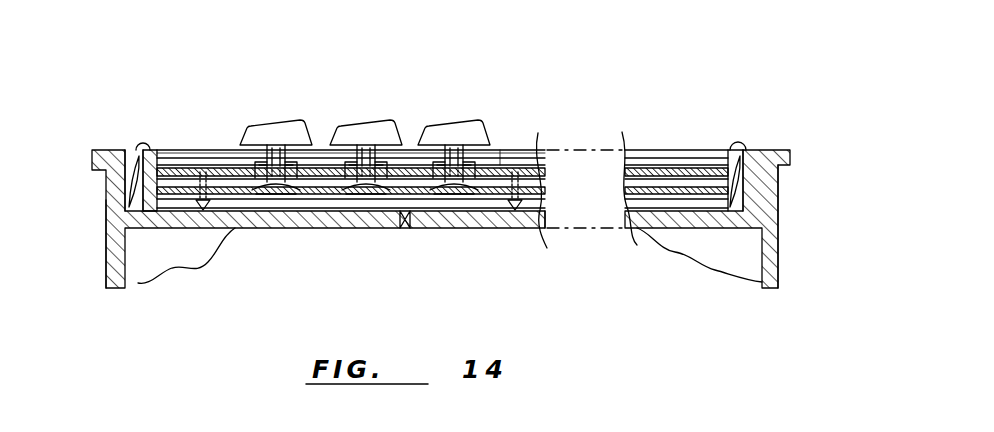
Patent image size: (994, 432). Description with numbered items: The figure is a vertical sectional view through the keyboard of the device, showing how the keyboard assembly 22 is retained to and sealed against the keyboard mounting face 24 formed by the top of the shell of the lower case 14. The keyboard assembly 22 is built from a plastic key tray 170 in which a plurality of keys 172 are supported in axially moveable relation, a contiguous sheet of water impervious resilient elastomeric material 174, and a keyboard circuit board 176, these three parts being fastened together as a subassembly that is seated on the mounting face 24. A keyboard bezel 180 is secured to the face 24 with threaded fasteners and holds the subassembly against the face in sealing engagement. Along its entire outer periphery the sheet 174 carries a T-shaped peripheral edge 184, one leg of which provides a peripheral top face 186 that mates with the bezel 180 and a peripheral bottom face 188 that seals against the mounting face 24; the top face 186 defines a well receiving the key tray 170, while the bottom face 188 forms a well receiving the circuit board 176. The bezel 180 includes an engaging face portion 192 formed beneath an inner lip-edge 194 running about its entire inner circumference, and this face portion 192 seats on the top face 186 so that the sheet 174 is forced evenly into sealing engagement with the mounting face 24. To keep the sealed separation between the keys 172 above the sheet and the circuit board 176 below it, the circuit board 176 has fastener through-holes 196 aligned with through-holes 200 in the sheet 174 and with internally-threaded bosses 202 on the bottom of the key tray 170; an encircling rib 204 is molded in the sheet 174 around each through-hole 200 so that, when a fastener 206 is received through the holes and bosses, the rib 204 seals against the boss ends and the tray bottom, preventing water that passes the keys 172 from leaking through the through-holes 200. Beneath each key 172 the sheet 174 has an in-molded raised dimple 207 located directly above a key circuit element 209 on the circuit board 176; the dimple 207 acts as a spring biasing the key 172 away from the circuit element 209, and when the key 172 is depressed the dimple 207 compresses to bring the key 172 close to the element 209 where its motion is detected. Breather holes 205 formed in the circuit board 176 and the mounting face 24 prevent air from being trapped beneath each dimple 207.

The lower case 14 is at (800, 225).
The keyboard assembly 22 is at (292, 57).
The keyboard mounting face 24 is at (164, 182).
The key tray 170 is at (405, 162).
The keys 172 is at (372, 130).
The sheet of water impervious resilient elastomeric material 174 is at (320, 158).
The keyboard circuit board 176 is at (333, 228).
The keyboard bezel 180 is at (745, 150).
The T-shaped peripheral edge 184 is at (137, 184).
The peripheral top face 186 is at (140, 162).
The peripheral bottom face 188 is at (146, 208).
The engaging face portion 192 is at (776, 196).
The inner lip-edge 194 is at (730, 158).
The fastener through-holes 196 is at (522, 222).
The through-holes 200 is at (496, 167).
The bosses 202 is at (527, 150).
The encircling rib 204 is at (540, 178).
The breather holes 205 is at (403, 226).
The fastener 206 is at (483, 228).
The raised dimples 207 is at (257, 188).
The key circuit element 209 is at (277, 228).